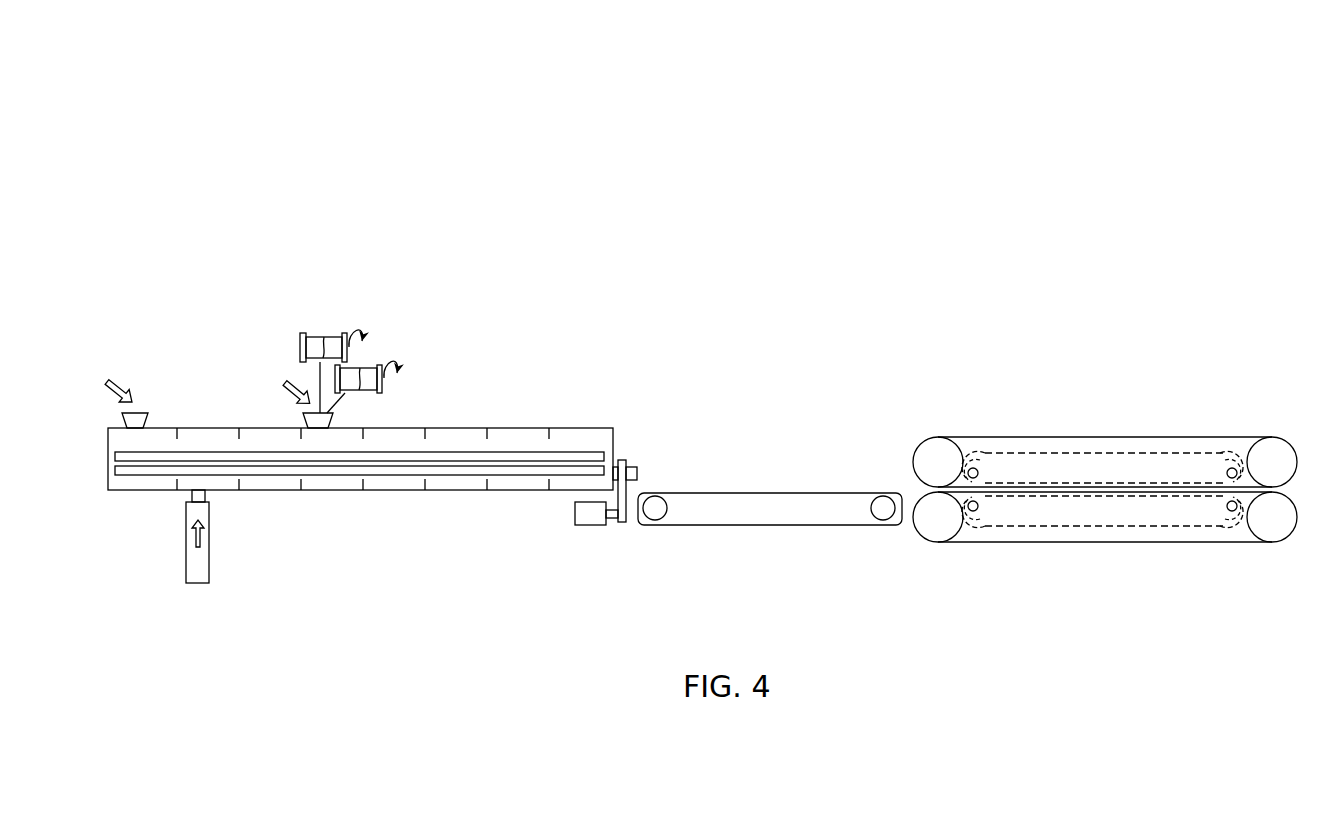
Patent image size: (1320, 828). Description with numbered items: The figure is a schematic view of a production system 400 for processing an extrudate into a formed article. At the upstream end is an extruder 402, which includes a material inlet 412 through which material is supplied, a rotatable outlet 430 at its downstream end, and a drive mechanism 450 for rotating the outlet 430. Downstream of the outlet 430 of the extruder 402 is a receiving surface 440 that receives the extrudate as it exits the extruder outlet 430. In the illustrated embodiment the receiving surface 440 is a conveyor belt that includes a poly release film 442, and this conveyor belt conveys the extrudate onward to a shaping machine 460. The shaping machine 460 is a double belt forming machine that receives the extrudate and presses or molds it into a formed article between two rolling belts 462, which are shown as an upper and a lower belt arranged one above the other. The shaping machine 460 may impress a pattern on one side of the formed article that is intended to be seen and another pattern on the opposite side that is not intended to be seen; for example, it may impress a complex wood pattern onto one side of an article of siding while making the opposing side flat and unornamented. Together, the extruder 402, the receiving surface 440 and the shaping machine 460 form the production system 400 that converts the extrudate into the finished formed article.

The production system 400 is at (247, 150).
The extruder 402 is at (463, 275).
The material inlet 412 is at (143, 402).
The rotatable outlet 430 is at (633, 467).
The receiving surface 440 is at (787, 455).
The poly release film 442 is at (782, 497).
The drive mechanism 450 is at (593, 533).
The shaping machine 460 is at (978, 392).
The rolling belts 462 is at (1047, 432).